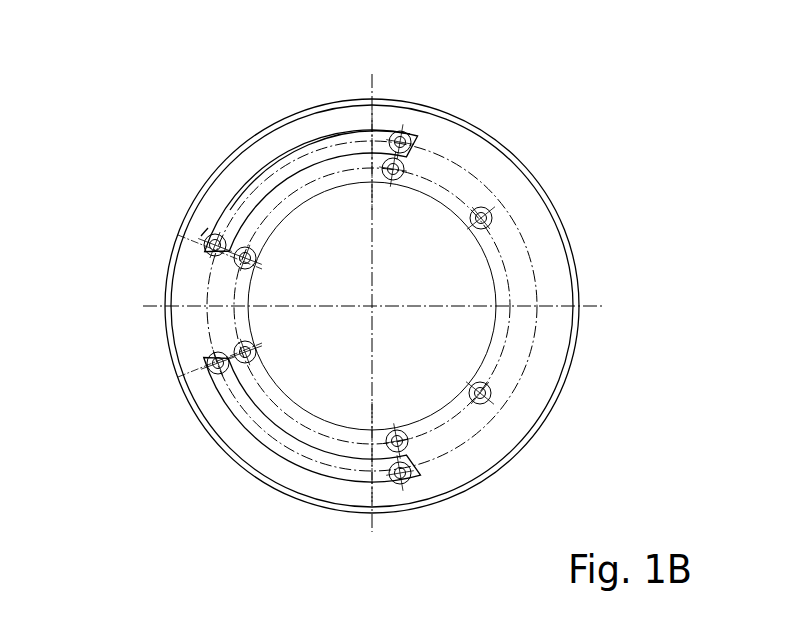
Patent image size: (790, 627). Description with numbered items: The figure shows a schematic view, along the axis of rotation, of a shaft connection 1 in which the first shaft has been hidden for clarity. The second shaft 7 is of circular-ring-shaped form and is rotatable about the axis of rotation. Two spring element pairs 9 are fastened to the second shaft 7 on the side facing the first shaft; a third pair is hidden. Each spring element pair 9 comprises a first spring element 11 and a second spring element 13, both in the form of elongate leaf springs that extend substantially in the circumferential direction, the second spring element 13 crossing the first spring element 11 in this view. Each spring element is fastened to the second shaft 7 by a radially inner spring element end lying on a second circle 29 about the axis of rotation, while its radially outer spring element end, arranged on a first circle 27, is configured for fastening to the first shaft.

The shaft connection 1 is at (80, 134).
The second shaft 7 is at (527, 162).
The spring element pair 9 is at (275, 167).
The first spring element 11 is at (362, 130).
The second spring element 13 is at (218, 224).
The first circle 27 is at (420, 150).
The second circle 29 is at (442, 178).